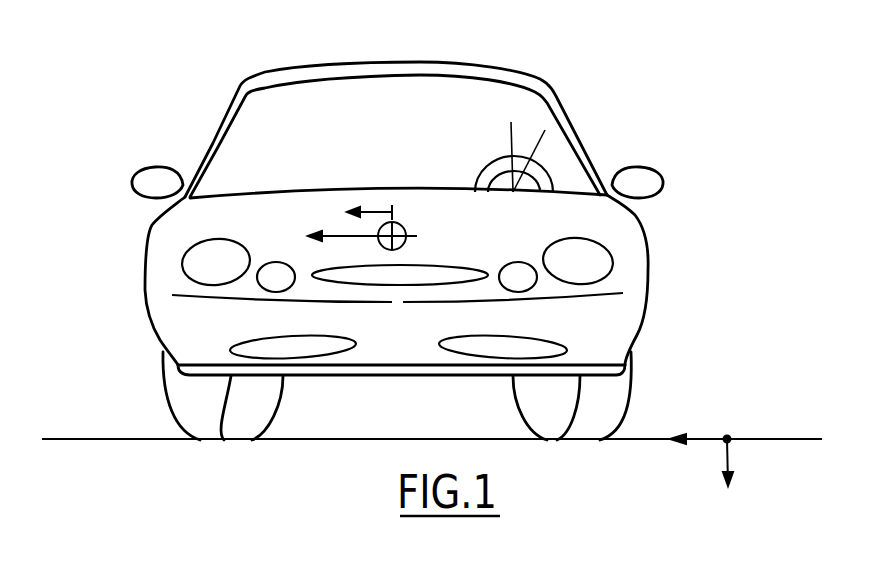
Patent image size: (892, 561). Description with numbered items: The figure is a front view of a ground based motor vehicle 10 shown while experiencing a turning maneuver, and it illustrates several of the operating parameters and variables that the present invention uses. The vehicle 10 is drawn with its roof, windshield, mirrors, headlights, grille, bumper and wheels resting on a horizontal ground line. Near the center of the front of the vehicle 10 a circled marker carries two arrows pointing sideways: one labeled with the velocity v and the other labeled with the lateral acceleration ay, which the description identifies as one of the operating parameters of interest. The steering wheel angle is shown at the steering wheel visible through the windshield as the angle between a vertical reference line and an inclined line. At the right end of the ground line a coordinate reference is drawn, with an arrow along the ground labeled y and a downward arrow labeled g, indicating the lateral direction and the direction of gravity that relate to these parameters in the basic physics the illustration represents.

The motor vehicle 10 is at (457, 251).
The vehicle velocity v is at (354, 236).
The lateral acceleration ay is at (354, 212).
The lateral axis y is at (432, 450).
The gravitational acceleration g is at (729, 474).